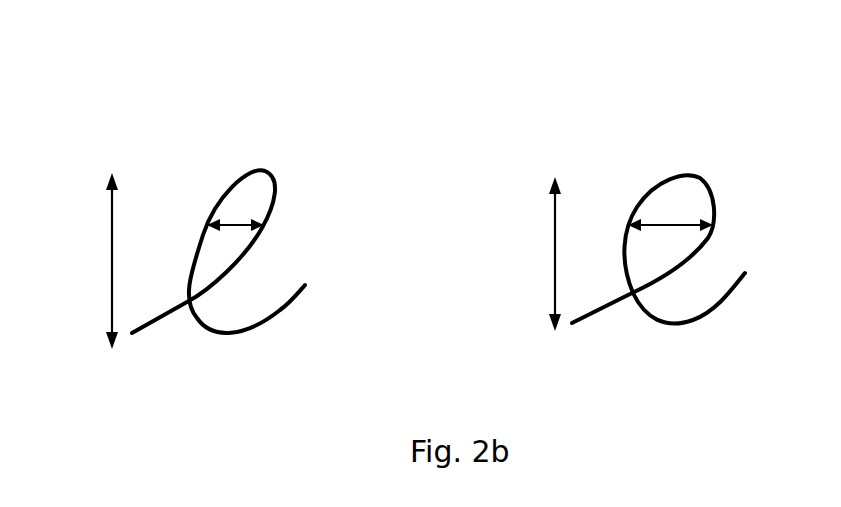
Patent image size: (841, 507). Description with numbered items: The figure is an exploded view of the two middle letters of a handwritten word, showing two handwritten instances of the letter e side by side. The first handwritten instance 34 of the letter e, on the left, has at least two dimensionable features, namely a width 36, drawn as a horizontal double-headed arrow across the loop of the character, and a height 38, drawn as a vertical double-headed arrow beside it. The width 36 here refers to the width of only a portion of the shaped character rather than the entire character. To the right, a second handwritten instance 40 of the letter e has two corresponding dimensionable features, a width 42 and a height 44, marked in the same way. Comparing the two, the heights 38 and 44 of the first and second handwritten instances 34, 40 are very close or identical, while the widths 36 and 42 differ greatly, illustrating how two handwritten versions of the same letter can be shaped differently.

The first handwritten instance of the letter e 34 is at (292, 127).
The width 36 is at (235, 223).
The height 38 is at (110, 240).
The second handwritten instance of the letter e 40 is at (717, 127).
The width 42 is at (658, 223).
The height 44 is at (553, 258).